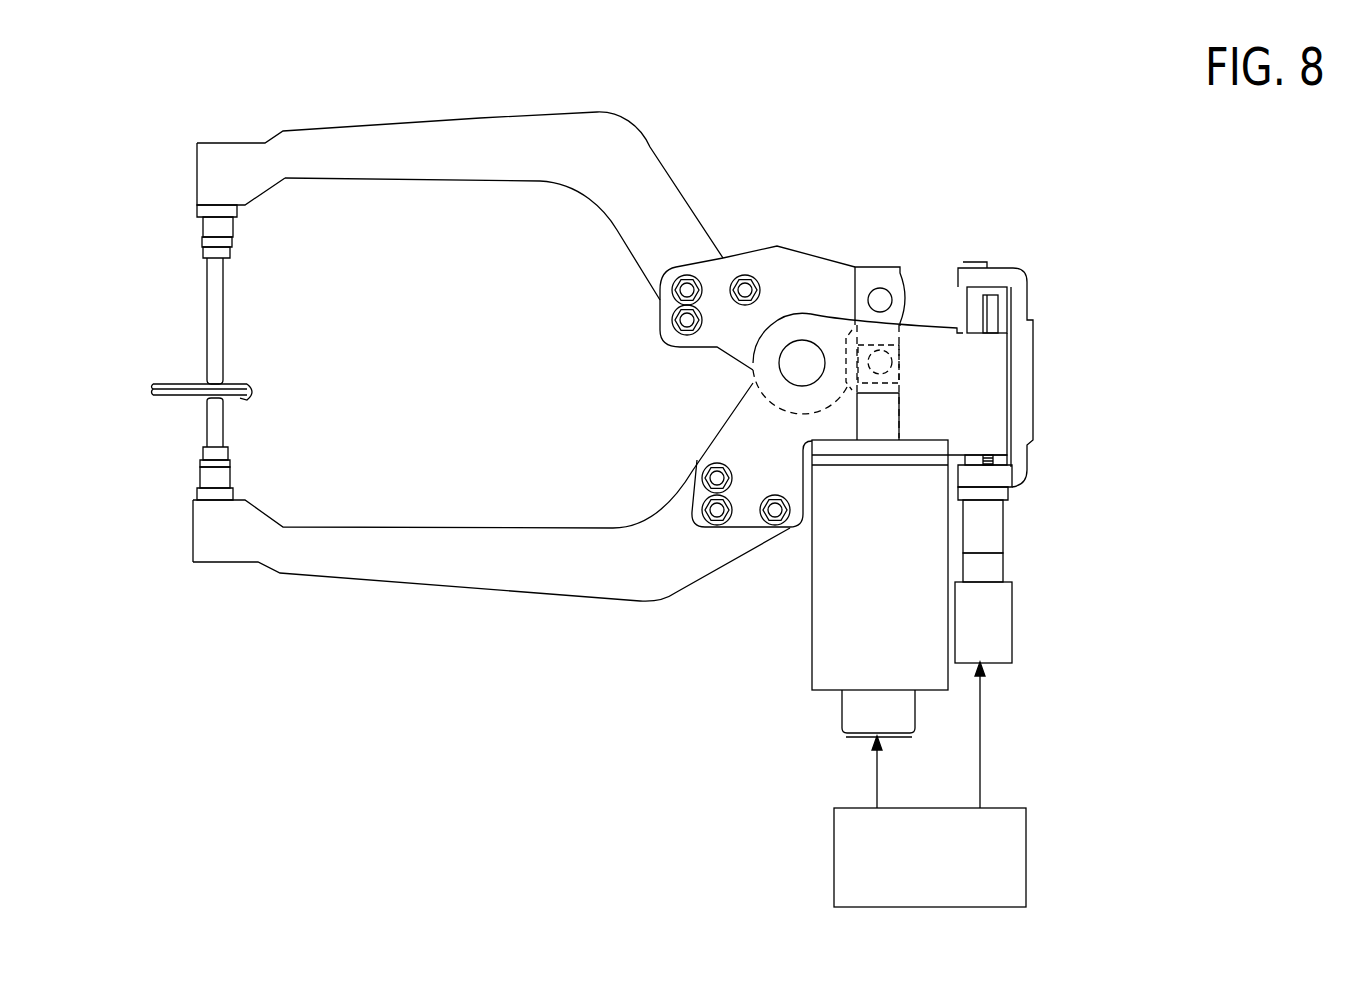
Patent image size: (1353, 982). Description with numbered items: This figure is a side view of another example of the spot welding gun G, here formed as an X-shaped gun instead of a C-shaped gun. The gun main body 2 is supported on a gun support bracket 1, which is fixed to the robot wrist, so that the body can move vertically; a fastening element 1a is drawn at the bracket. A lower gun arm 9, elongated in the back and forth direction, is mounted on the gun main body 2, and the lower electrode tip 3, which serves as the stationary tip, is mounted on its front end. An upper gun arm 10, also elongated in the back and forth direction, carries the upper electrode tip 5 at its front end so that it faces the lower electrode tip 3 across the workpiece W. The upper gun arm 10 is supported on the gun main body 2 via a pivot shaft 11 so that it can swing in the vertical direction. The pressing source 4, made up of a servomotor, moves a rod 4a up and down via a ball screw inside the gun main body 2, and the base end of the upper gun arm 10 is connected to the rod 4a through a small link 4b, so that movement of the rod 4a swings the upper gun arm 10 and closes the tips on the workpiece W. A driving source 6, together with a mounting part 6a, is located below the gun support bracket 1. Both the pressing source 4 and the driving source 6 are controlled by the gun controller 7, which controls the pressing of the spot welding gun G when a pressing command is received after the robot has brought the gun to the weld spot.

The spot welding gun G is at (652, 101).
The upper gun arm 10 is at (562, 123).
The lower gun arm 9 is at (540, 600).
The upper electrode tip 5 is at (218, 323).
The lower electrode tip 3 is at (215, 428).
The workpiece W is at (247, 385).
The pivot shaft 11 is at (797, 370).
The gun main body 2 is at (993, 373).
The small link 4b is at (917, 318).
The rod 4a is at (893, 415).
The pressing source 4 is at (830, 638).
The gun support bracket 1 is at (1018, 274).
The fastening bolt 1a is at (977, 310).
The mounting nut 6a is at (992, 462).
The driving source 6 is at (1003, 635).
The gun controller 7 is at (848, 852).